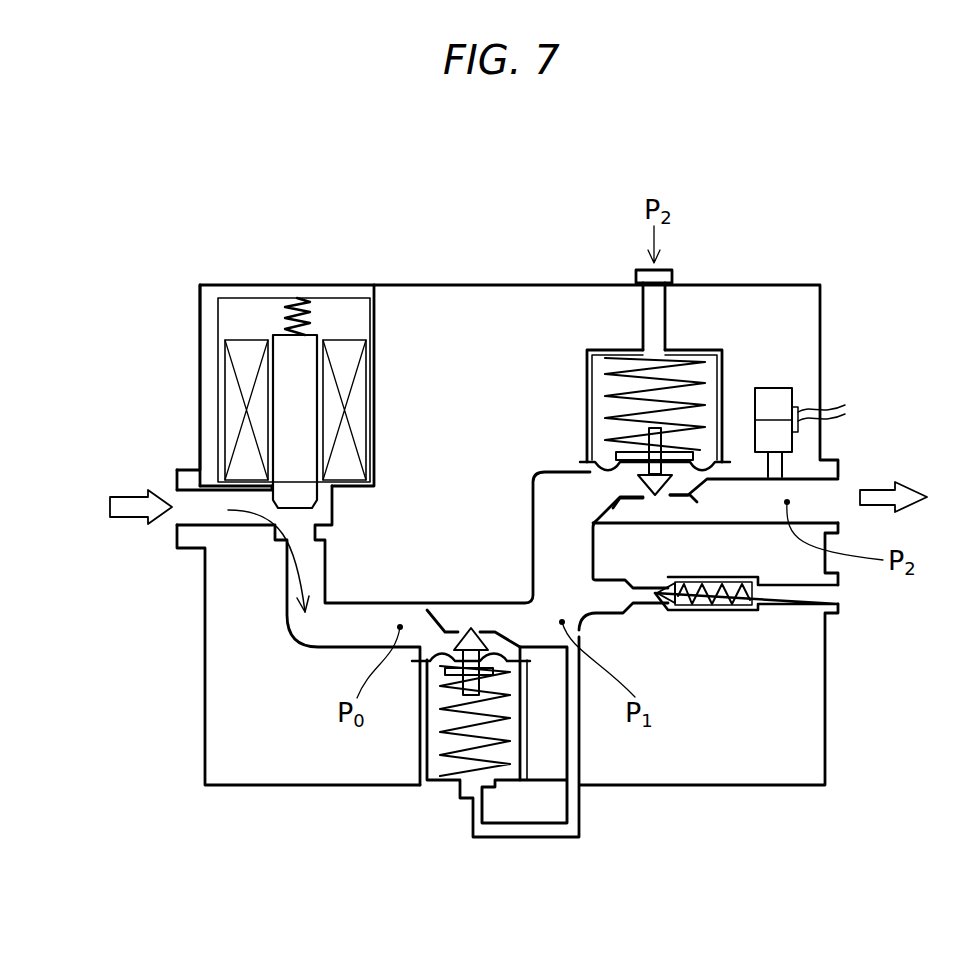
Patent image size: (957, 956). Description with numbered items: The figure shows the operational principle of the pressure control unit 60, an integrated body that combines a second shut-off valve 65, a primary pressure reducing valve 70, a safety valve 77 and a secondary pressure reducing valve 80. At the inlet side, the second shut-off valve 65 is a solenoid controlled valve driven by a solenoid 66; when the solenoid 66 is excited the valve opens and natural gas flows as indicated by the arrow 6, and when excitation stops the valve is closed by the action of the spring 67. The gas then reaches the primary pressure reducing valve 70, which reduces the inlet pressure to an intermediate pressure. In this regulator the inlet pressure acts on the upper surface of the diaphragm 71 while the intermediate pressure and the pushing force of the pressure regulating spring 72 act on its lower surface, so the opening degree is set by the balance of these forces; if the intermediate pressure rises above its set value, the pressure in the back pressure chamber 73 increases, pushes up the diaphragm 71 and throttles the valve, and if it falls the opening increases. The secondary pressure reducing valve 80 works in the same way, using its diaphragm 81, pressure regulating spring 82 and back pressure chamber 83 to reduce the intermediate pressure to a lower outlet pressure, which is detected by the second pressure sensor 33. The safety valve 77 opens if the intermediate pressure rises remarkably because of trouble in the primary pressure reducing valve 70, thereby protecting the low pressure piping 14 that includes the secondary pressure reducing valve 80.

The pressure control unit 60 is at (463, 284).
The secondary pressure reducing valve 80 is at (675, 332).
The primary pressure reducing valve 70 is at (485, 771).
The second shut-off valve 65 is at (300, 298).
The solenoid 66 is at (237, 405).
The spring 67 is at (282, 317).
The arrow 6 is at (302, 570).
The low pressure piping 14 is at (537, 480).
The diaphragm 81 is at (716, 447).
The pressure regulating spring 82 is at (693, 363).
The back pressure chamber 83 is at (603, 407).
The diaphragm 71 is at (433, 670).
The pressure regulating spring 72 is at (447, 757).
The back pressure chamber 73 is at (508, 727).
The safety valve 77 is at (727, 612).
The second pressure sensor 33 is at (782, 387).